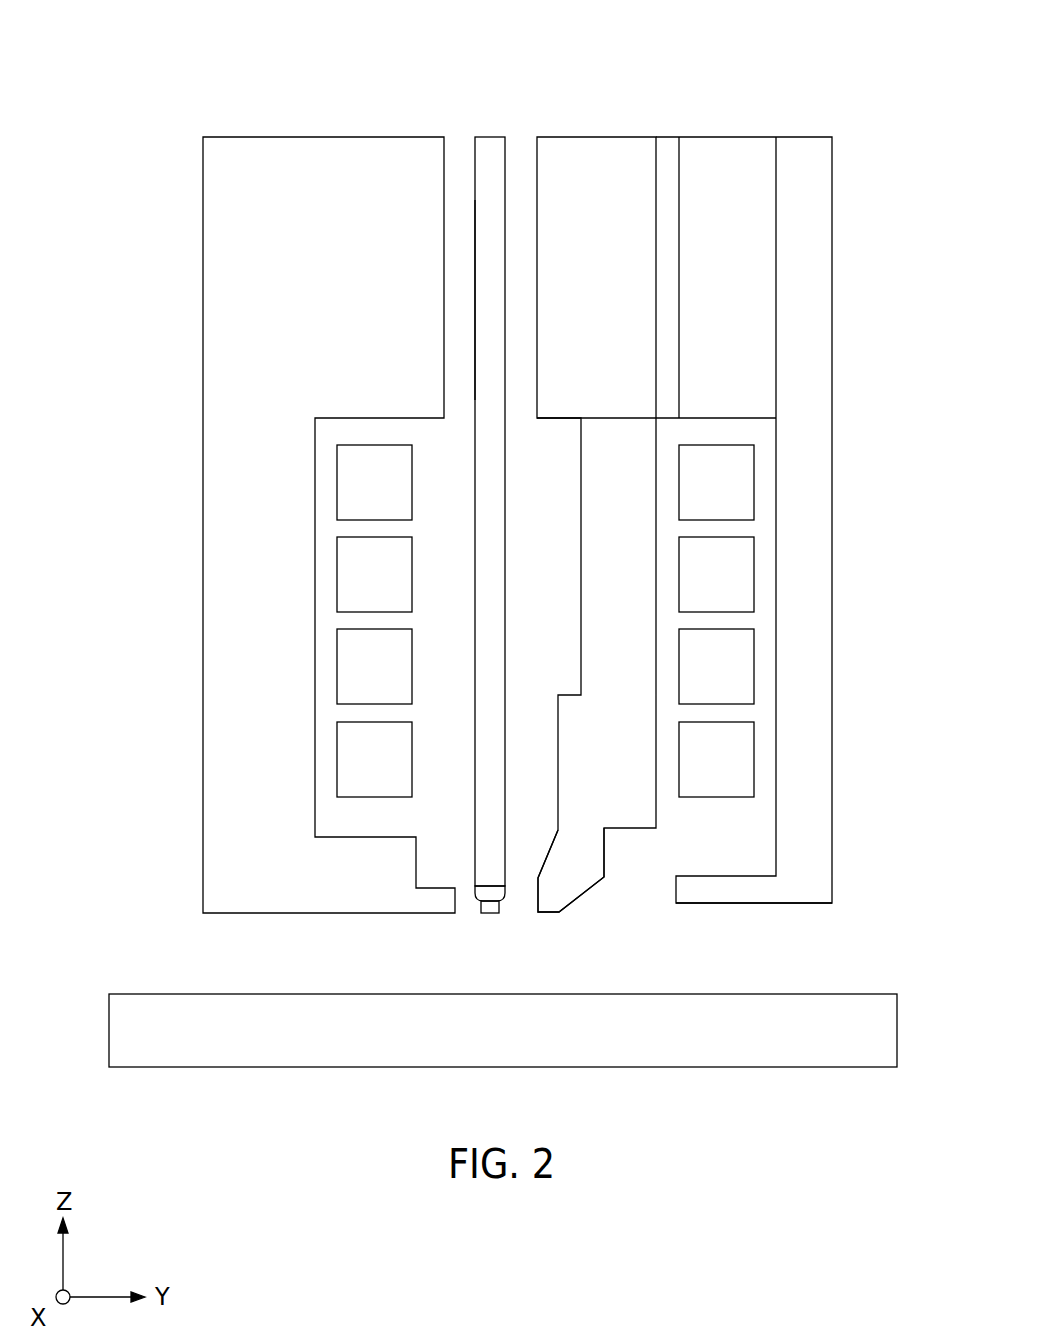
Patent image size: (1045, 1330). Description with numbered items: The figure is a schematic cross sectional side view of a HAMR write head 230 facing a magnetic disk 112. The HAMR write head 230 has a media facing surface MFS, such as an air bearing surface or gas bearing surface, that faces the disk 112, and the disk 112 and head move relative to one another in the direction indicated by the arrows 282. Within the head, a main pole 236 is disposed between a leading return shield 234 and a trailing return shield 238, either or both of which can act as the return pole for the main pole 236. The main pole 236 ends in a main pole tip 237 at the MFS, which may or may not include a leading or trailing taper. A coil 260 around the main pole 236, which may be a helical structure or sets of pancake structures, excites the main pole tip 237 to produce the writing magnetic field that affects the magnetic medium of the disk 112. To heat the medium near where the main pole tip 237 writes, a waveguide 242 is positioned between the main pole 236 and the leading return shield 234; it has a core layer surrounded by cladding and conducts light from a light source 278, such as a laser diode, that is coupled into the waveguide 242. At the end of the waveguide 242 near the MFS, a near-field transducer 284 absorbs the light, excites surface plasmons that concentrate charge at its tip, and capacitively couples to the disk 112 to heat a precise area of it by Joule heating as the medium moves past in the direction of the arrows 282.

The HAMR write head 230 is at (156, 42).
The light source 278 is at (489, 136).
The waveguide 242 is at (488, 308).
The near-field transducer 284 is at (491, 914).
The leading return shield 234 is at (274, 590).
The main pole 236 is at (638, 590).
The main pole tip 237 is at (595, 880).
The trailing return shield 238 is at (826, 590).
The coil 260 is at (397, 500).
The arrows 282 is at (872, 342).
The media facing surface MFS is at (784, 922).
The magnetic disk 112 is at (509, 1041).